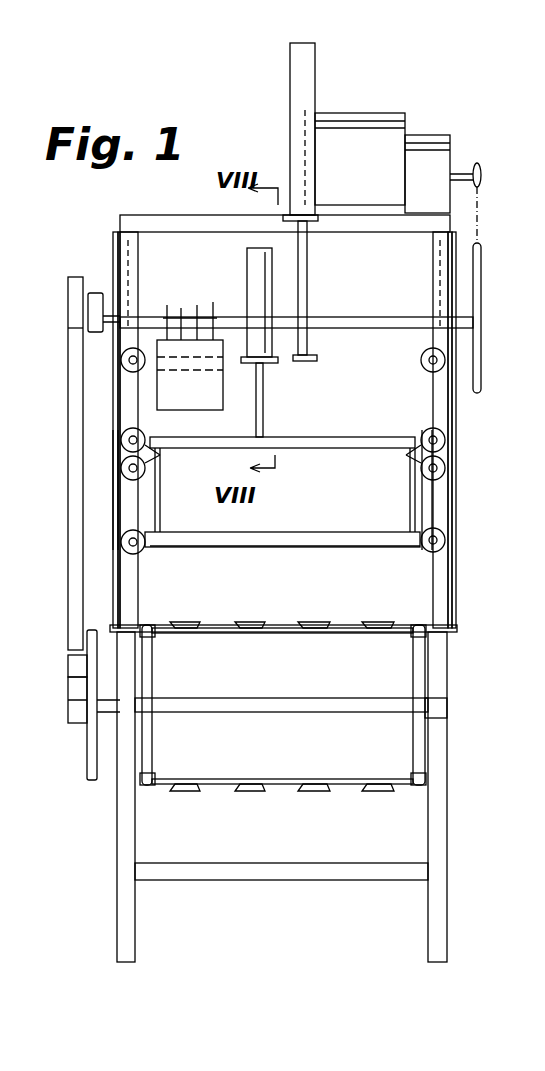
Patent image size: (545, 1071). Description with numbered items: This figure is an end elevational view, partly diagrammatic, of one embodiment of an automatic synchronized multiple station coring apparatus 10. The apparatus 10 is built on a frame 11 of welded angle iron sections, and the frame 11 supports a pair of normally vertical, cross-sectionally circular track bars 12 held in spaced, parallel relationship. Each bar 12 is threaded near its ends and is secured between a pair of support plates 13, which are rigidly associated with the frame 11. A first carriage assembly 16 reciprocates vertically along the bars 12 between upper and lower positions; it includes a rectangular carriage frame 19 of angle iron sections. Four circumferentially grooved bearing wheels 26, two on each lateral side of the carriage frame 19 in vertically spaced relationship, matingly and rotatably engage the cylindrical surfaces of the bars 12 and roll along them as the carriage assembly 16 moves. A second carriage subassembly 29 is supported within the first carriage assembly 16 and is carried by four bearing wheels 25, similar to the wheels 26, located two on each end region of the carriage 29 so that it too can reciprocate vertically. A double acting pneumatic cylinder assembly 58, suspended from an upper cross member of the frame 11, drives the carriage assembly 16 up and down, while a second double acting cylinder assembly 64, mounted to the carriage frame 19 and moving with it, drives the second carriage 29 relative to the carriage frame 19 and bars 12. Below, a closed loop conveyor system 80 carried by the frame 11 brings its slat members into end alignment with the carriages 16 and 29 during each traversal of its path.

The automatic synchronized multiple station coring apparatus 10 is at (431, 73).
The frame 11 is at (447, 808).
The track bars 12 is at (108, 473).
The support plates 13 is at (112, 230).
The first carriage assembly 16 is at (327, 533).
The carriage frame 19 is at (232, 546).
The bearing wheels 25 is at (146, 470).
The grooved bearing wheels 26 is at (145, 370).
The second carriage subassembly 29 is at (368, 430).
The pneumatic cylinder assembly 58 is at (290, 68).
The cylinder assembly 64 is at (250, 270).
The closed loop conveyor system 80 is at (392, 625).